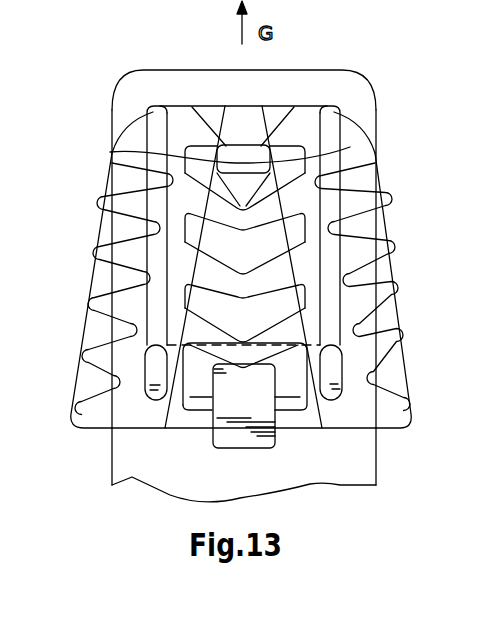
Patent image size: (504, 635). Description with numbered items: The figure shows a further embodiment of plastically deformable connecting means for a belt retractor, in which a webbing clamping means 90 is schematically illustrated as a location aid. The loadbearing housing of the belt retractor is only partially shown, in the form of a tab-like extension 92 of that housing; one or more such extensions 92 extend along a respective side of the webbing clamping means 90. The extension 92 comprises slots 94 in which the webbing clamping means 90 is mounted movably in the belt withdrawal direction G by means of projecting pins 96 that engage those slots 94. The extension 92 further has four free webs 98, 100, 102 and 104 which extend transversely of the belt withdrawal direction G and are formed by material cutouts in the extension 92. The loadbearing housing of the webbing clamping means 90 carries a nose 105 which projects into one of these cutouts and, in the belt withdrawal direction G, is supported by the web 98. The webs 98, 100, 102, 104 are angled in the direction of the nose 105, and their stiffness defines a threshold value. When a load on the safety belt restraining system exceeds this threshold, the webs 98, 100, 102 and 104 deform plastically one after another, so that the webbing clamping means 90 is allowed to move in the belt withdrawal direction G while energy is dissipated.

The webbing clamping means 90 is at (388, 257).
The tab-like extension 92 is at (363, 457).
The slots 94 is at (157, 117).
The projecting pins 96 is at (118, 383).
The free web 98 is at (283, 338).
The free web 100 is at (283, 283).
The free web 102 is at (290, 230).
The free web 104 is at (350, 147).
The nose 105 is at (230, 418).